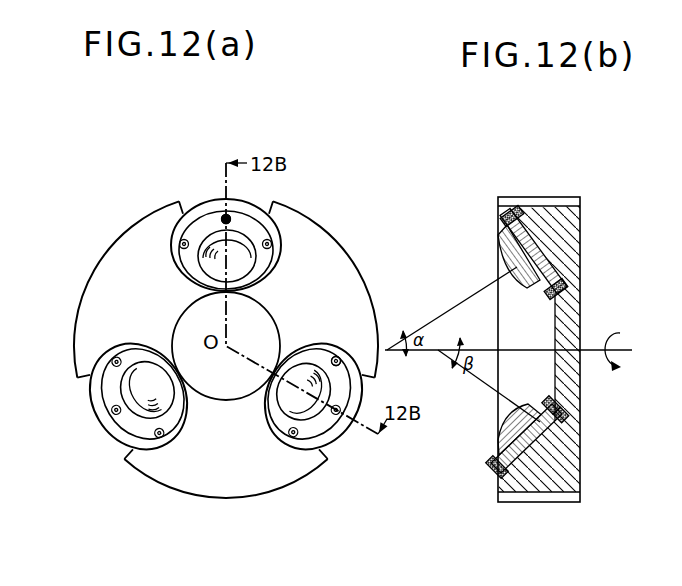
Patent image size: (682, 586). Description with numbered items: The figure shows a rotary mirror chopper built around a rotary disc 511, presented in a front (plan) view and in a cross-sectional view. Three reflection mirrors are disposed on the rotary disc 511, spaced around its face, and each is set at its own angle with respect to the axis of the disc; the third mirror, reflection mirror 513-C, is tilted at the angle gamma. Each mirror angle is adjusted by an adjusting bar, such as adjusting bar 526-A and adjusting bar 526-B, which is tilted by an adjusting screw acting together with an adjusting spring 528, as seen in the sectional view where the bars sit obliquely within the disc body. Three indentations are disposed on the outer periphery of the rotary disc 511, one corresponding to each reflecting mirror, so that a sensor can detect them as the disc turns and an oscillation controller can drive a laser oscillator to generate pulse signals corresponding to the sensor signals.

The rotary disc 511 is at (557, 218).
The reflection mirror 513-C is at (148, 398).
The adjusting bar 526-A is at (508, 206).
The adjusting bar 526-B is at (488, 474).
The adjusting spring 528 is at (564, 416).